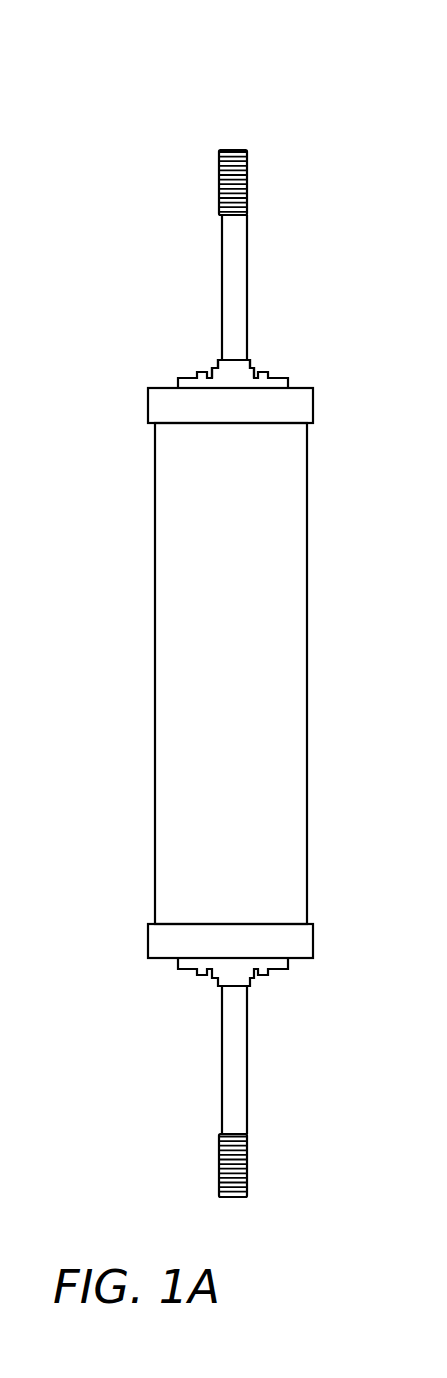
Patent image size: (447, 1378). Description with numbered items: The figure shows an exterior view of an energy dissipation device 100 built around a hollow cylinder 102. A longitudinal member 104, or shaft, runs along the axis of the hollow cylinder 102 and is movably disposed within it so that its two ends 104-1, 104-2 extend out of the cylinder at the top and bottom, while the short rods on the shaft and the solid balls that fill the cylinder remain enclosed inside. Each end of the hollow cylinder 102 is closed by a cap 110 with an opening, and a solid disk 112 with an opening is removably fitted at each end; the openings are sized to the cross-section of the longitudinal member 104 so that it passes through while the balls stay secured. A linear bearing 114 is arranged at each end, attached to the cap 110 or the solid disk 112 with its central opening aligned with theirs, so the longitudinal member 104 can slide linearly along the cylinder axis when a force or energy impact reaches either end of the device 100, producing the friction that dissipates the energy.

The energy dissipation device 100 is at (115, 63).
The hollow cylinder 102 is at (181, 656).
The longitudinal member 104 is at (219, 1064).
The first end of the longitudinal member 104-1 is at (235, 148).
The second end of the longitudinal member 104-2 is at (235, 1197).
The cap 110 is at (164, 403).
The solid disk 112 is at (187, 375).
The linear bearing 114 is at (215, 360).